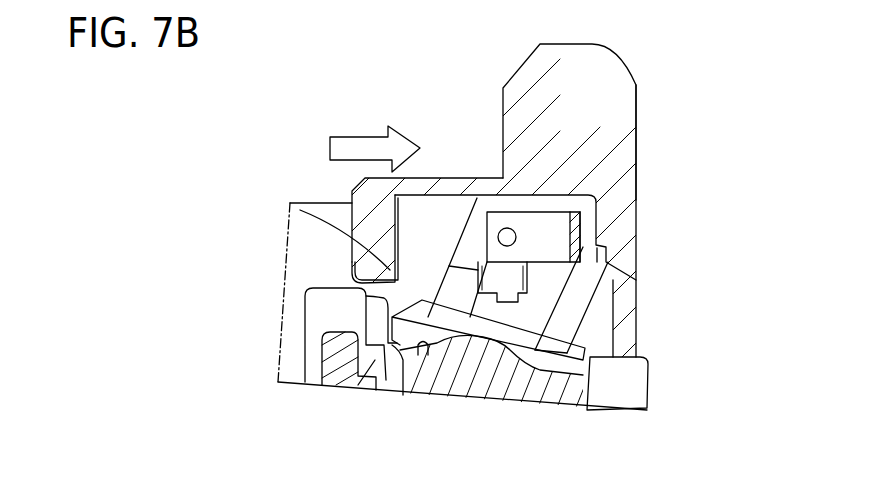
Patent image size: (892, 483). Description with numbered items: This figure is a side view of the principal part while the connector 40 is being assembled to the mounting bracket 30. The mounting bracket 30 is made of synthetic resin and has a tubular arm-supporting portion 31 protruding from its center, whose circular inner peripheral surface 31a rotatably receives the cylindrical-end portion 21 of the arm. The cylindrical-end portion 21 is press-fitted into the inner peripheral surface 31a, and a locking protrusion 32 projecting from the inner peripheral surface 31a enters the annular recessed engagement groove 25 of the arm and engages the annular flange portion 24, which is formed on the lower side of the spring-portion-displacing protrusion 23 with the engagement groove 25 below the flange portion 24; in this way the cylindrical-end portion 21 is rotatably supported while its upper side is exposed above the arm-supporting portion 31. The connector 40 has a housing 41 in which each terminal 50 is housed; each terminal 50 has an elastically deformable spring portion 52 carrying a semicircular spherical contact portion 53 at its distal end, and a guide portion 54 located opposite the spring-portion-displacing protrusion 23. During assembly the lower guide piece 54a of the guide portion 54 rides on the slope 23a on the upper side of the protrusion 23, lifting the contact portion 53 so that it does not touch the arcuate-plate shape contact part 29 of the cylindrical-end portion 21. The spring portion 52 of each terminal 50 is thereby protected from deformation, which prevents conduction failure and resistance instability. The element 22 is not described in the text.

The cylindrical-end portion 21 is at (333, 206).
The insert member 22 is at (545, 212).
The spring-portion-displacing protrusion 23 is at (560, 344).
The slope 23a is at (565, 296).
The annular flange portion 24 is at (557, 384).
The annular recessed engagement groove 25 is at (433, 362).
The arcuate-plate shape contact part 29 is at (437, 160).
The mounting bracket 30 is at (660, 376).
The arm-supporting portion 31 is at (300, 300).
The inner peripheral surface 31a is at (375, 362).
The locking protrusion 32 is at (406, 396).
The connector 40 is at (530, 241).
The housing 41 is at (642, 84).
The terminal 50 is at (590, 220).
The spring portion 52 is at (638, 166).
The contact portion 53 is at (508, 226).
The guide portion 54 is at (390, 272).
The lower guide piece 54a is at (490, 396).